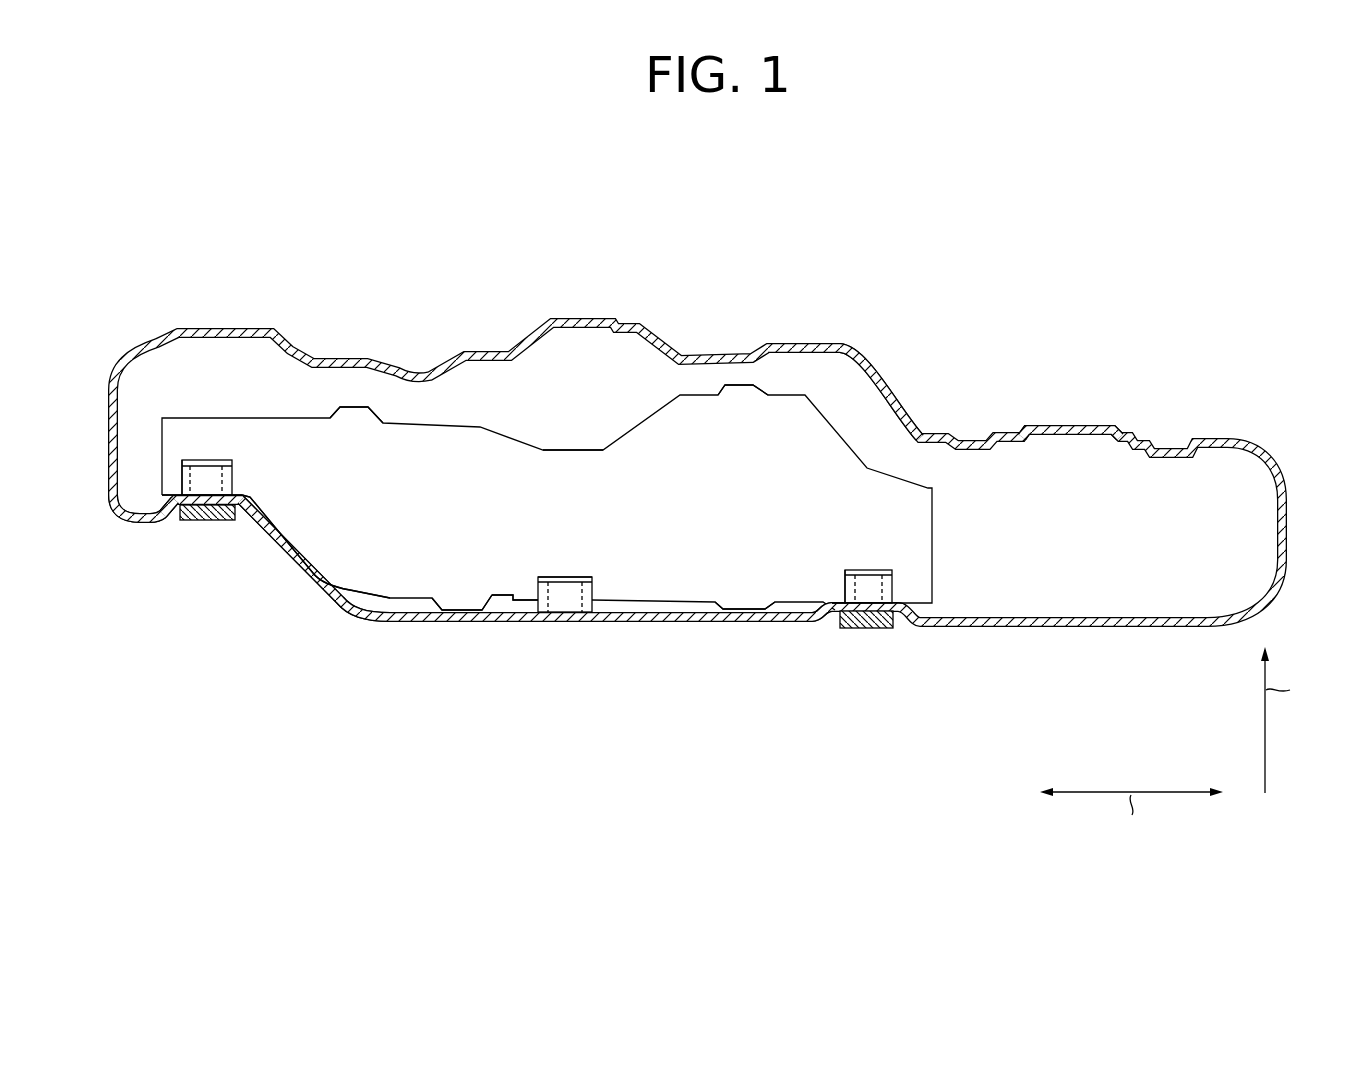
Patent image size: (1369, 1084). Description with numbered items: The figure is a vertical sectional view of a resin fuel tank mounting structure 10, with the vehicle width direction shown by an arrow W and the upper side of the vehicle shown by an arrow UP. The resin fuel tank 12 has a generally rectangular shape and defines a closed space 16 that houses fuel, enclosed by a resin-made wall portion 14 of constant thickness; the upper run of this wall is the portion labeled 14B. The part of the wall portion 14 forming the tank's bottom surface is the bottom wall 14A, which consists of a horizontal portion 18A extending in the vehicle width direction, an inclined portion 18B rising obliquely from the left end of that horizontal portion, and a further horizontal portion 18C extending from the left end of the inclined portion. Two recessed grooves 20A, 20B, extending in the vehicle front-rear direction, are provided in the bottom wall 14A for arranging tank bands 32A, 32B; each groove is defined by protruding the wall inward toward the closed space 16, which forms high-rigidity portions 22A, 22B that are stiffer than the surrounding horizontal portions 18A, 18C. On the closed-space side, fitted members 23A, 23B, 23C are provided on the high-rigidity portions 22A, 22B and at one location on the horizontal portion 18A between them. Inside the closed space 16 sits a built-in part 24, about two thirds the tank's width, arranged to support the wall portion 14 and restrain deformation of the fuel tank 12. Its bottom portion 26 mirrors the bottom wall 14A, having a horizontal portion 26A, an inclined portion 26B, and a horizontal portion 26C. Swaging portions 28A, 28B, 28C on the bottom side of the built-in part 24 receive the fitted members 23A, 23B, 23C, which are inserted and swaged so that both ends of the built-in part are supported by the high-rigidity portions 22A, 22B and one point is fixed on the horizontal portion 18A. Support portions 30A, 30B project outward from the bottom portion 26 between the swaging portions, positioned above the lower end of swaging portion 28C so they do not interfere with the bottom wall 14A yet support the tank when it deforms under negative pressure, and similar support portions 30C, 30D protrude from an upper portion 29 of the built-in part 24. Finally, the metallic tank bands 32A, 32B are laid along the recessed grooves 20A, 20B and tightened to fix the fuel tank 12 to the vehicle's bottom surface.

The resin fuel tank mounting structure 10 is at (708, 511).
The resin fuel tank 12 is at (1067, 424).
The wall portion 14 is at (1207, 437).
The bottom wall 14A is at (1070, 628).
The upper wall portion 14B is at (832, 343).
The closed space 16 is at (1115, 541).
The horizontal portion 18A is at (690, 626).
The inclined portion 18B is at (273, 560).
The horizontal portion 18C is at (136, 528).
The recessed groove 20A is at (833, 606).
The recessed groove 20B is at (172, 523).
The high-rigidity portion 22A is at (923, 564).
The high-rigidity portion 22B is at (249, 458).
The fitted member 23A is at (893, 586).
The fitted member 23B is at (233, 476).
The fitted member 23C is at (593, 590).
The built-in part 24 is at (472, 421).
The bottom portion 26 is at (650, 623).
The horizontal portion 26A is at (516, 601).
The inclined portion 26B is at (345, 603).
The horizontal portion 26C is at (272, 503).
The swaging portion 28A is at (845, 590).
The swaging portion 28B is at (182, 478).
The swaging portion 28C is at (566, 577).
The upper portion 29 is at (570, 450).
The support portion 30A is at (738, 620).
The support portion 30B is at (464, 615).
The support portion 30C is at (740, 387).
The support portion 30D is at (350, 405).
The tank band 32A is at (867, 629).
The tank band 32B is at (207, 521).